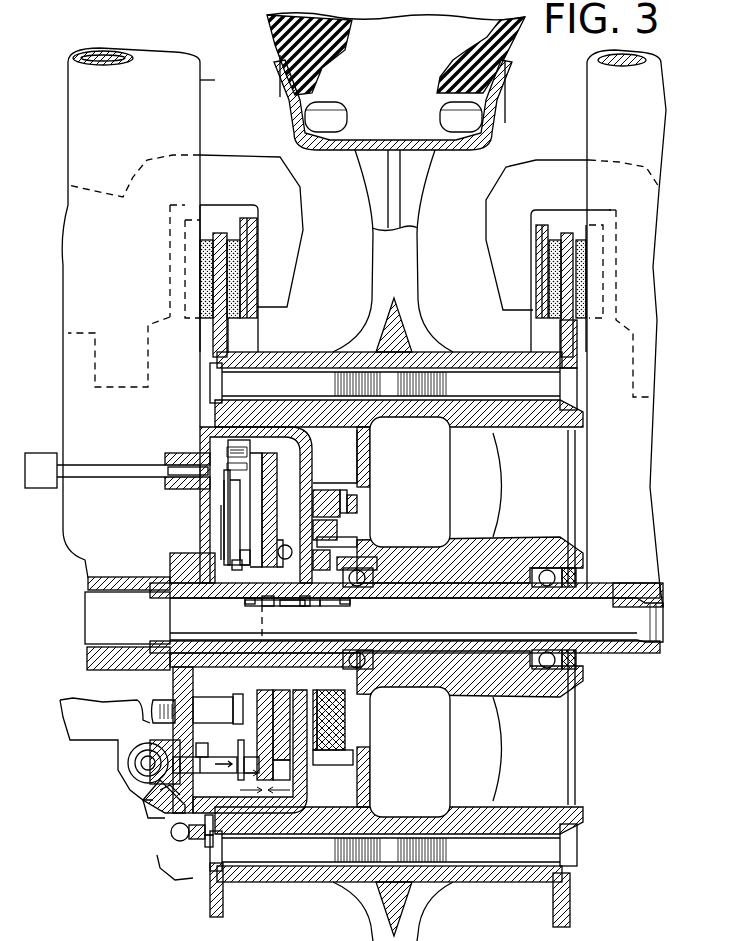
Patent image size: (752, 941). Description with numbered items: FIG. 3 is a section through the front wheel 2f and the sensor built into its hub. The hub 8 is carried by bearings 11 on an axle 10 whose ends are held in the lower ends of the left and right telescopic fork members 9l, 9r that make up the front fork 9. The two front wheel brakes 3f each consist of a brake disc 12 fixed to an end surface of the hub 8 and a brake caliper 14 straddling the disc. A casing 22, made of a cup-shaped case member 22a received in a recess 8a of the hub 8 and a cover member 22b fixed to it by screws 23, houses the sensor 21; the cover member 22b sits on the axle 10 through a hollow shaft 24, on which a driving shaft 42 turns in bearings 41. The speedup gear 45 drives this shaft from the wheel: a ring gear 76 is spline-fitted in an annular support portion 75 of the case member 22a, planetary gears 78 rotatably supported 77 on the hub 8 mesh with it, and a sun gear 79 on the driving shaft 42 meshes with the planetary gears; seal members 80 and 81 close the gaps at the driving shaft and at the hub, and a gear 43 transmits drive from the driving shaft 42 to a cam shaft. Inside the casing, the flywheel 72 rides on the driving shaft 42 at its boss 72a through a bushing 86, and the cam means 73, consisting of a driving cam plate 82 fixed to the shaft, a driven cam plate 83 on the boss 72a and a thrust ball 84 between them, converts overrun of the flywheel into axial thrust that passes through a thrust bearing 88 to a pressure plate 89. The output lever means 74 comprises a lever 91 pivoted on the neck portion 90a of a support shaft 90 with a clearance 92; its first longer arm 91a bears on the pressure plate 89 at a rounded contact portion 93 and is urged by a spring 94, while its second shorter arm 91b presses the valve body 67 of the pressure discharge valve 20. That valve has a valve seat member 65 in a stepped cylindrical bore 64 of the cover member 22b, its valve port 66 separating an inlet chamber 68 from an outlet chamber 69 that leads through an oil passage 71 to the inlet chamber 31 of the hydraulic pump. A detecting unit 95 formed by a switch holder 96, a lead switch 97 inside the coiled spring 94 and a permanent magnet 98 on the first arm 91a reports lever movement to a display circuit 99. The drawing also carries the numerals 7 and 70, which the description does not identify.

The front fork 9 is at (68, 100).
The right telescopic fork member 9r is at (214, 81).
The left telescopic fork member 9l is at (600, 84).
The front wheel brake 3f is at (217, 153).
The front wheel 2f is at (507, 62).
The brake disc 12 is at (220, 233).
The brake caliper 14 is at (296, 187).
The hub 8 is at (297, 358).
The recess 8a is at (330, 437).
The housing 7 is at (190, 440).
The gear 43 is at (190, 560).
The display circuit 99 is at (95, 470).
The detecting unit 95 is at (170, 470).
The switch holder 96 is at (178, 489).
The spring 94 is at (200, 490).
The permanent magnet 98 is at (240, 462).
The flywheel 72 is at (277, 502).
The sensor 21 is at (302, 462).
The cam means 73 is at (284, 545).
The thrust ball 84 is at (278, 550).
The speedup gear 45 is at (327, 490).
The annular support portion 75 is at (352, 495).
The ring gear 76 is at (348, 500).
The planetary gears 78 is at (335, 530).
The planetary gear support 77 is at (357, 540).
The lead switch 97 is at (220, 520).
The lever 91 is at (233, 515).
The first longer arm 91a is at (238, 535).
The pressure plate 89 is at (242, 555).
The thrust bearing 88 is at (236, 563).
The axle 10 is at (450, 622).
The bearings 11 is at (372, 578).
The contact portion 93 is at (245, 616).
The bushing 86 is at (260, 606).
The boss 72a is at (270, 606).
The driving shaft 42 is at (295, 606).
The hollow shaft 24 is at (308, 606).
The seal member 80 is at (330, 606).
The bearings 41 is at (256, 606).
The inlet chamber 31 is at (137, 700).
The support shaft 90 is at (175, 695).
The neck portion 90a is at (213, 710).
The clearance 92 is at (236, 700).
The pivot 70 is at (128, 763).
The inlet chamber 68 is at (140, 752).
The valve port 66 is at (160, 752).
The stepped cylindrical bore 64 is at (205, 760).
The oil passage 71 is at (200, 745).
The output lever means 74 is at (244, 758).
The valve body 67 is at (260, 765).
The second shorter arm 91b is at (265, 764).
The driving cam plate 82 is at (276, 708).
The driven cam plate 83 is at (277, 760).
The sun gear 79 is at (323, 700).
The seal member 81 is at (353, 757).
The valve seat member 65 is at (155, 795).
The pressure discharge valve 20 is at (165, 800).
The outlet chamber 69 is at (178, 793).
The screws 23 is at (171, 832).
The cover member 22b is at (200, 832).
The case member 22a is at (205, 840).
The casing 22 is at (174, 870).